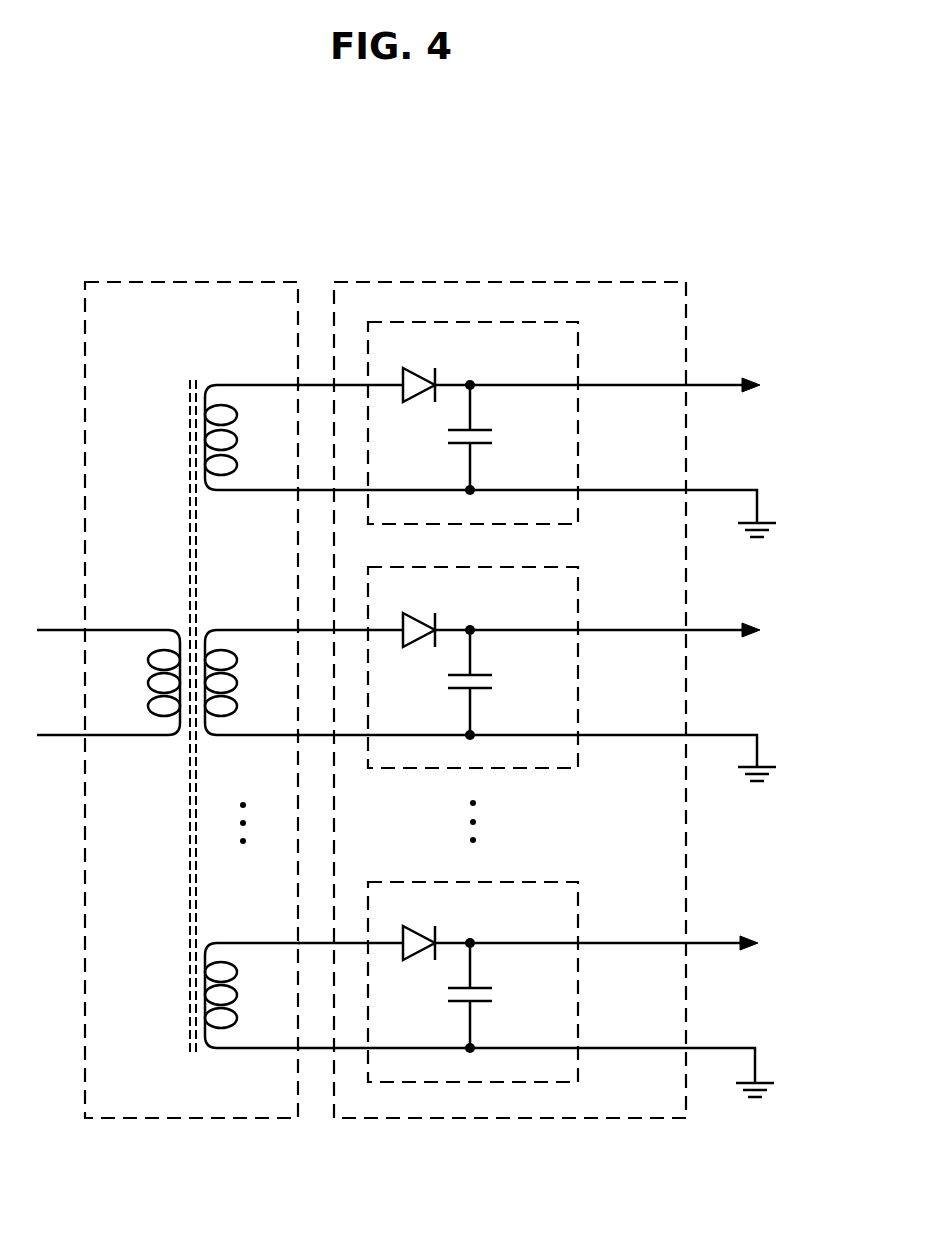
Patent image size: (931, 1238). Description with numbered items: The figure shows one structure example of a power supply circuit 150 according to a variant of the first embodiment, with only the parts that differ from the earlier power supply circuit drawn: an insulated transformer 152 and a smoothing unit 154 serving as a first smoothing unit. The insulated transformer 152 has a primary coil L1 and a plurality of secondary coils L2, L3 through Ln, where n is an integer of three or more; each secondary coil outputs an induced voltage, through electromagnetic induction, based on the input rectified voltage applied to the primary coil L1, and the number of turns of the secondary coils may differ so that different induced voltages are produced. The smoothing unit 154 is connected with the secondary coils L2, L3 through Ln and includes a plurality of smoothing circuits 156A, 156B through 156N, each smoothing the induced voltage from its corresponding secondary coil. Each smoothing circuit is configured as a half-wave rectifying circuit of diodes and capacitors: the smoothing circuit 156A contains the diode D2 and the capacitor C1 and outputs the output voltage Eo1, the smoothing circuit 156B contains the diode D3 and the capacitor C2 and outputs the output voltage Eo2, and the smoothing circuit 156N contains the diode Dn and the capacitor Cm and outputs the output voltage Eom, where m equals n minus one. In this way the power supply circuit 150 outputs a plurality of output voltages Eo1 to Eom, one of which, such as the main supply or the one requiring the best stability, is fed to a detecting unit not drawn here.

The power supply circuit 150 is at (780, 169).
The insulated transformer 152 is at (188, 280).
The smoothing unit 154 is at (505, 280).
The smoothing circuit 156A is at (508, 322).
The smoothing circuit 156B is at (508, 567).
The smoothing circuit 156N is at (508, 882).
The primary coil L1 is at (108, 682).
The secondary coil L2 is at (252, 437).
The secondary coil L3 is at (252, 682).
The secondary coil Ln is at (252, 995).
The diode D2 is at (422, 365).
The diode D3 is at (422, 608).
The diode Dn is at (422, 922).
The capacitor C1 is at (490, 437).
The capacitor C2 is at (490, 682).
The capacitor Cm is at (493, 995).
The output voltage Eo1 is at (781, 387).
The output voltage Eo2 is at (781, 631).
The output voltage Eom is at (783, 946).